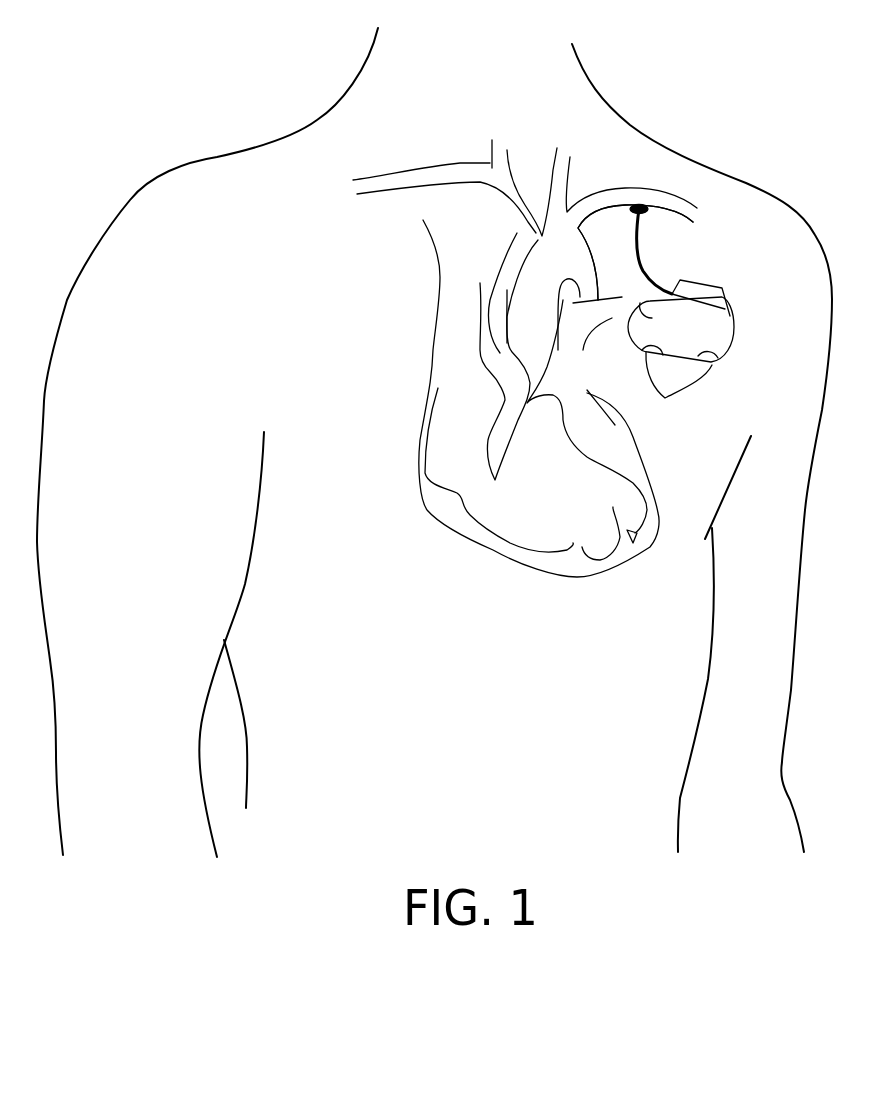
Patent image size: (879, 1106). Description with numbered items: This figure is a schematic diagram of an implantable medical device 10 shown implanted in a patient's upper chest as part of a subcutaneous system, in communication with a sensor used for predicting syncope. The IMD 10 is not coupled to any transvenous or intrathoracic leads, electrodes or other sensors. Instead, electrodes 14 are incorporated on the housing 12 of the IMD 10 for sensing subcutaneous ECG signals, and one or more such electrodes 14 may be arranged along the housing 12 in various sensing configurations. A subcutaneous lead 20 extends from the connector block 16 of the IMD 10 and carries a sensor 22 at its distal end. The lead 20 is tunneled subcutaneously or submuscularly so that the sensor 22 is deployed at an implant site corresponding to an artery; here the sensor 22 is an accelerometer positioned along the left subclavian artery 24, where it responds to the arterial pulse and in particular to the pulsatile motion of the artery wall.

The implantable medical device 10 is at (681, 277).
The housing 12 is at (725, 328).
The electrodes 14 is at (679, 390).
The connector block 16 is at (704, 295).
The subcutaneous lead 20 is at (655, 285).
The sensor 22 is at (641, 206).
The left subclavian artery 24 is at (695, 215).